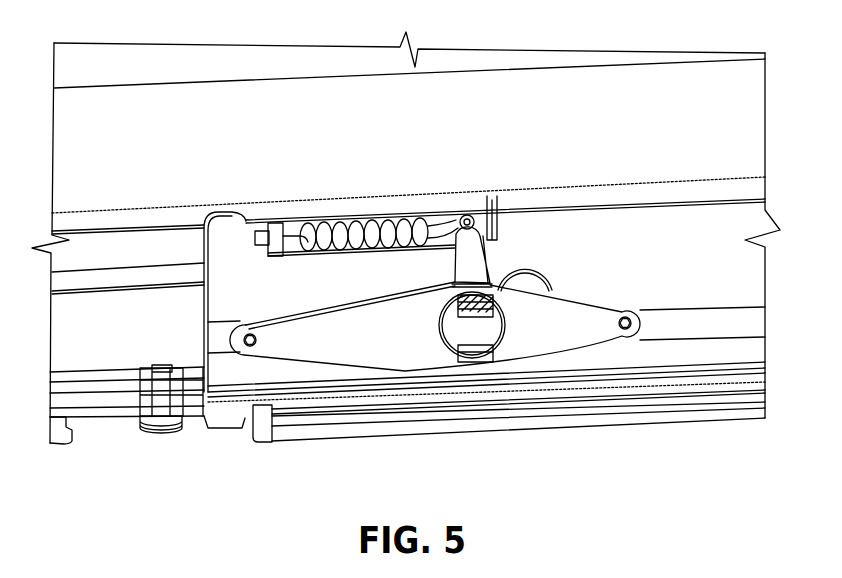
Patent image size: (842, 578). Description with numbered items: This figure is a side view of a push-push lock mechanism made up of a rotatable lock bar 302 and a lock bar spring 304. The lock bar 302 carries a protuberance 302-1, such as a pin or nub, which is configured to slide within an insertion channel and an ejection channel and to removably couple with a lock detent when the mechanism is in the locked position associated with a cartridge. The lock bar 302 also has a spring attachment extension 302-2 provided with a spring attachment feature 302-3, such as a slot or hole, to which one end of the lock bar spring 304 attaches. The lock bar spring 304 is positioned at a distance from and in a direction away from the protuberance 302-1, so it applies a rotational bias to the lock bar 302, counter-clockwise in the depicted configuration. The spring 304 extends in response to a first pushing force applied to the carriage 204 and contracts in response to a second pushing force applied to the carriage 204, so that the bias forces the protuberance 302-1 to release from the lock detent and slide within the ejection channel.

The carriage 204 is at (752, 215).
The rotatable lock bar 302 is at (527, 347).
The protuberance 302-1 is at (625, 310).
The spring attachment extension 302-2 is at (472, 265).
The spring attachment feature 302-3 is at (486, 220).
The lock bar spring 304 is at (378, 221).